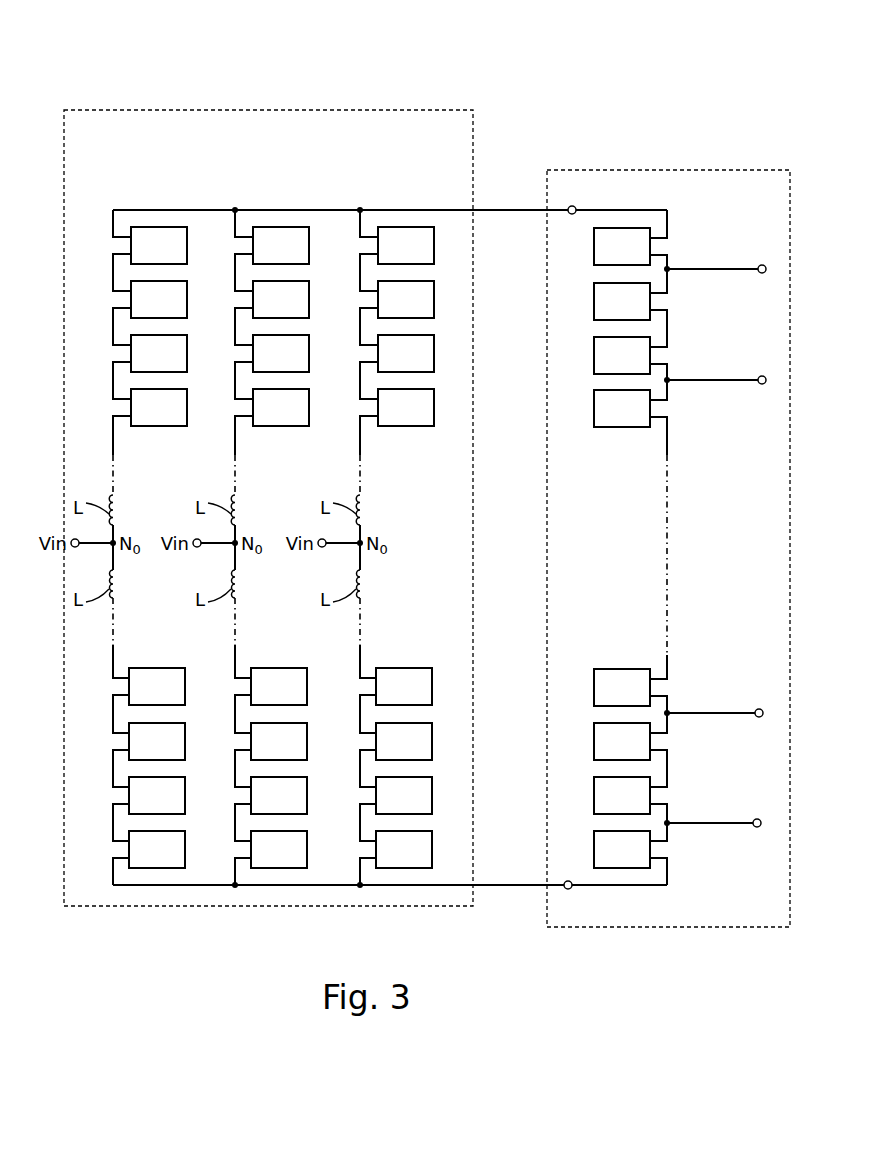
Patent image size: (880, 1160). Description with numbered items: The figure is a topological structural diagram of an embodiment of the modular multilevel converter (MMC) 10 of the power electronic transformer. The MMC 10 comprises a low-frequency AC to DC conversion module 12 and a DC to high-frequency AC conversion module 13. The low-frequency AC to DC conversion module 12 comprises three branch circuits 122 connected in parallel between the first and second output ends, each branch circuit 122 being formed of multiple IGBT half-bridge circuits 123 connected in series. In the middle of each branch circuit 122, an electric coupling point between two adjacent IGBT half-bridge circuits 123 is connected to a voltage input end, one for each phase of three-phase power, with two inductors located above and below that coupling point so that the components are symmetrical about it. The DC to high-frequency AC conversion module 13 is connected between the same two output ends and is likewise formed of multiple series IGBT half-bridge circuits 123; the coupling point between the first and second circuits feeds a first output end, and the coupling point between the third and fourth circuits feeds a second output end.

The modular multilevel converter (MMC) 10 is at (530, 95).
The low-frequency AC to DC conversion module 12 is at (170, 110).
The DC to high-frequency AC conversion module 13 is at (663, 170).
The branch circuit 122 is at (238, 512).
The IGBT half-bridge circuit 123 is at (389, 547).